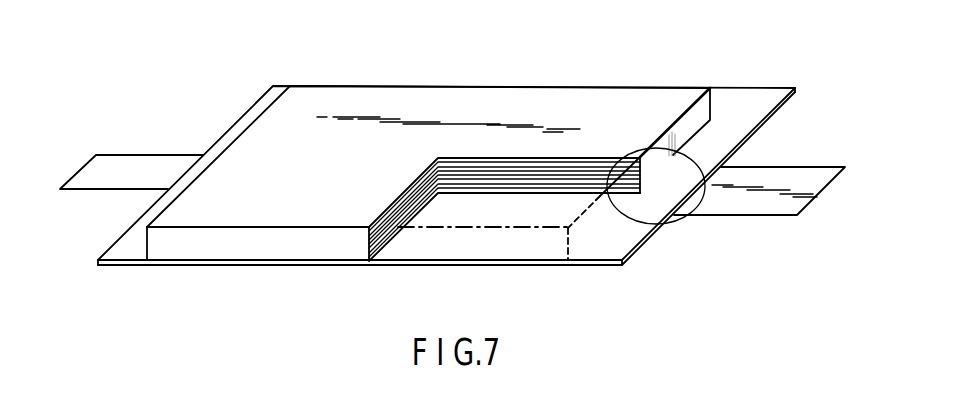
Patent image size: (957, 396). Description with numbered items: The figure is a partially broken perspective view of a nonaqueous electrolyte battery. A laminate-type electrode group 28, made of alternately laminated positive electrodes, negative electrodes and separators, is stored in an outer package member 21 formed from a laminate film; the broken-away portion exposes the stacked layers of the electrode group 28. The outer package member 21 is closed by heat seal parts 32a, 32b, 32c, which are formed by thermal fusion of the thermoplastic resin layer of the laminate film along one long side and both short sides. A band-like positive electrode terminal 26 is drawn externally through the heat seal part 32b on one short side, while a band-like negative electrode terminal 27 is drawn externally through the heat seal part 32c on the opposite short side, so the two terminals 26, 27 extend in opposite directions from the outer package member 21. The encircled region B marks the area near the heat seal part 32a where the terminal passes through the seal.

The outer package member 21 is at (623, 102).
The positive electrode terminal 26 is at (103, 177).
The negative electrode terminal 27 is at (752, 202).
The laminate-type electrode group 28 is at (488, 199).
The heat seal part 32a is at (715, 97).
The heat seal part 32b is at (127, 250).
The heat seal part 32c is at (745, 127).
The detail region B is at (683, 222).